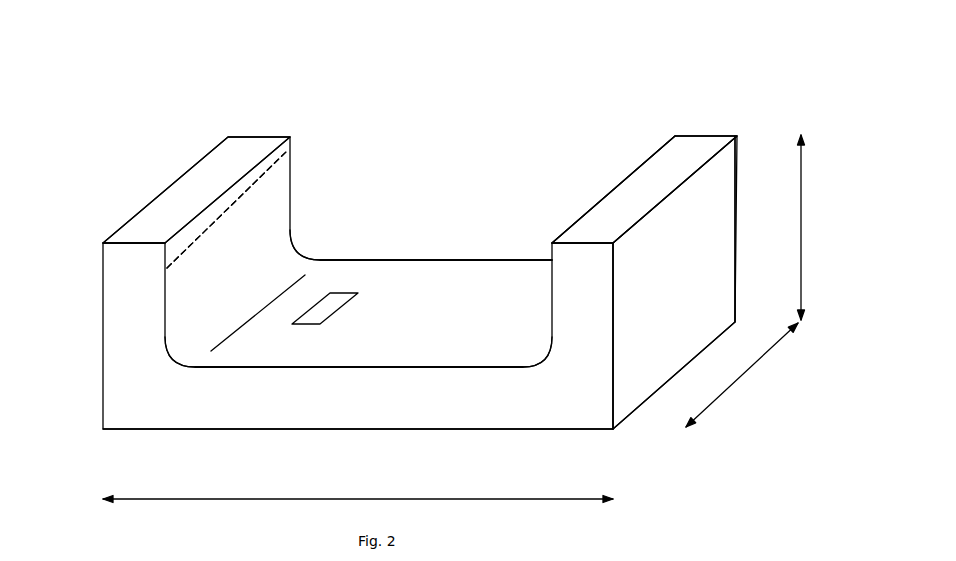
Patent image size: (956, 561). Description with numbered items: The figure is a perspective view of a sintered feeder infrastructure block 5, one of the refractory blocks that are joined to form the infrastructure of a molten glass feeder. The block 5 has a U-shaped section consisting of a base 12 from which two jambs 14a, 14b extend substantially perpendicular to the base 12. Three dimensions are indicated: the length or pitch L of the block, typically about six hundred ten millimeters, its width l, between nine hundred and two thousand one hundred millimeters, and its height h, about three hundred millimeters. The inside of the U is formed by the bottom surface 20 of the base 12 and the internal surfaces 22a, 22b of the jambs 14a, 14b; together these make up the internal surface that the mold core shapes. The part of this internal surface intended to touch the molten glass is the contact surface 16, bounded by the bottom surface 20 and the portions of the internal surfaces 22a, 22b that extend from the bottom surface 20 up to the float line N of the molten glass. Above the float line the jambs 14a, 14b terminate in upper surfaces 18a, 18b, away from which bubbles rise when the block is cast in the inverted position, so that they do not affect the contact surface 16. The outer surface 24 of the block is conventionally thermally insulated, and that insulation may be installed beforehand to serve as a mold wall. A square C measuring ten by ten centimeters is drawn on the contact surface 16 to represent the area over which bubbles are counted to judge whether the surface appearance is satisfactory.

The feeder infrastructure block 5 is at (570, 147).
The base 12 is at (238, 394).
The jamb 14a is at (233, 172).
The jamb 14b is at (660, 175).
The contact surface 16 is at (500, 272).
The upper surface of jamb 18a is at (187, 193).
The upper surface of jamb 18b is at (700, 148).
The bottom surface 20 is at (398, 297).
The internal surface of jamb 22a is at (275, 160).
The internal surface of jamb 22b is at (610, 230).
The outer surface 24 is at (702, 207).
The square C is at (322, 298).
The float line N is at (230, 215).
The height h is at (789, 227).
The length L is at (742, 375).
The width l is at (358, 489).